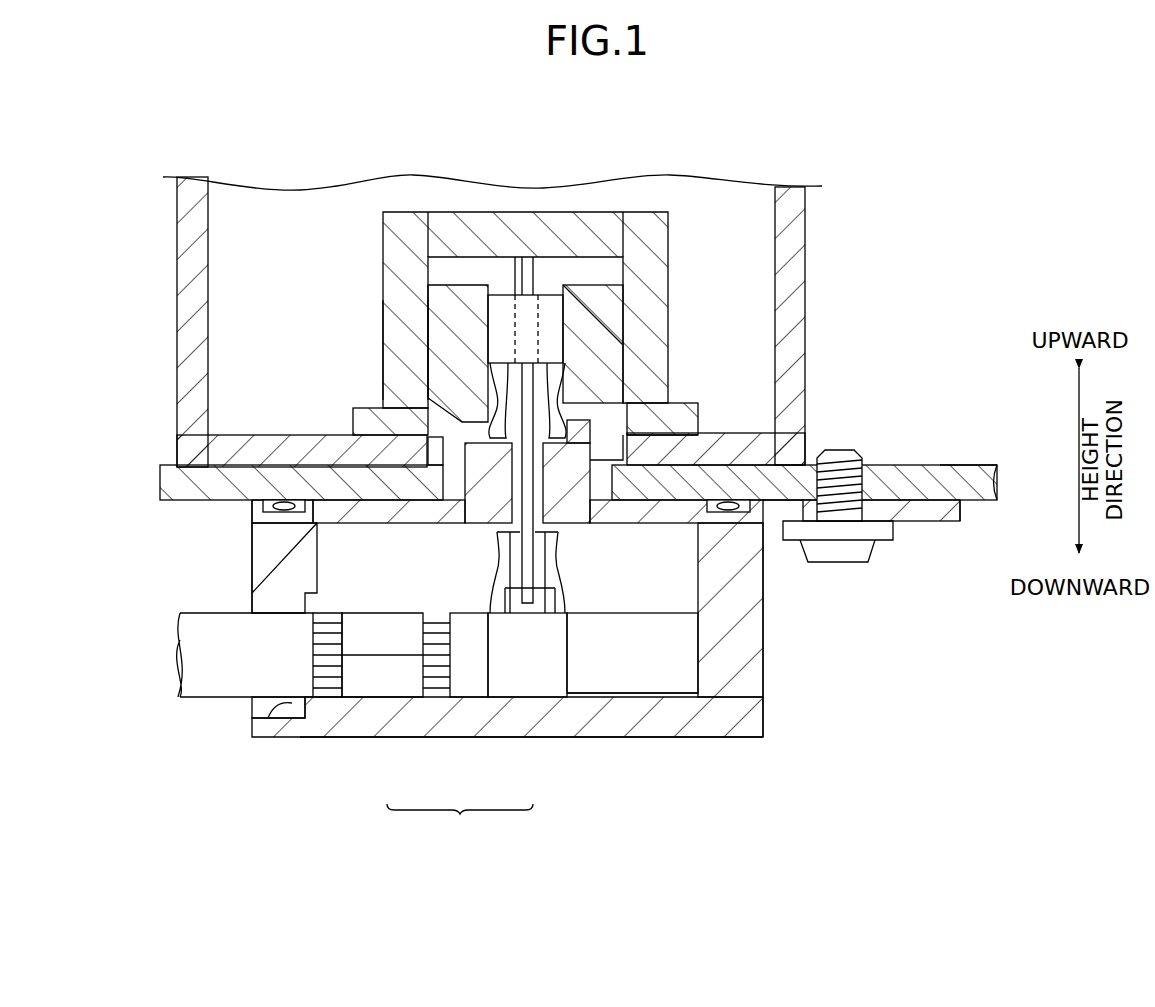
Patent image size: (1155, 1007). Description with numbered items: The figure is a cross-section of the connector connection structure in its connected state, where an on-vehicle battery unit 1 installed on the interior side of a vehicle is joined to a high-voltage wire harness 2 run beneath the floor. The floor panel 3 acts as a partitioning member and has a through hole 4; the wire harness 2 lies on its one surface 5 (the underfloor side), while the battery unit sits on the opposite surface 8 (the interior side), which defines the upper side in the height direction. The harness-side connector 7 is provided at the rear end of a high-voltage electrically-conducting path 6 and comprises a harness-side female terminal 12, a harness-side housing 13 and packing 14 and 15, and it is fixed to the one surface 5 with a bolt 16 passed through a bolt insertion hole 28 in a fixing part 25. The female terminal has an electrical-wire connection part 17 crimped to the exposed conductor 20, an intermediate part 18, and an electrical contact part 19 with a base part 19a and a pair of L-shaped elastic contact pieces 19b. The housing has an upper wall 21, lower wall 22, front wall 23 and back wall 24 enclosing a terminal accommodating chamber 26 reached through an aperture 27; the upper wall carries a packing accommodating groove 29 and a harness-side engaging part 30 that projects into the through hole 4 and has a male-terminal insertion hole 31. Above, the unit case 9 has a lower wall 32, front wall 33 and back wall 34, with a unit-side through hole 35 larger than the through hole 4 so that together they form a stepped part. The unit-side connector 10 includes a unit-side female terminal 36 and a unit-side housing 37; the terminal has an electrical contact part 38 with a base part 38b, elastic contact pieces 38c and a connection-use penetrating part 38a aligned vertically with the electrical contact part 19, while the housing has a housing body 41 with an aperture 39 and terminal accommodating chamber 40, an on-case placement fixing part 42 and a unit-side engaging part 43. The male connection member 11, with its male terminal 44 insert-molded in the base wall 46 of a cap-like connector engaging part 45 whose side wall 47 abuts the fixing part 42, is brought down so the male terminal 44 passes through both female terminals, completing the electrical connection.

The on-vehicle battery unit 1 is at (492, 319).
The wire harness 2 is at (582, 583).
The floor panel 3 is at (1000, 485).
The through hole 4 is at (605, 500).
The one surface 5 is at (962, 508).
The high-voltage electrically-conducting path 6 is at (190, 645).
The harness-side connector 7 is at (768, 660).
The opposite surface 8 is at (955, 465).
The unit case 9 is at (175, 312).
The unit-side connector 10 is at (554, 366).
The male connection member 11 is at (523, 278).
The harness-side female terminal 12 is at (460, 824).
The harness-side housing 13 is at (578, 739).
The packing 14 is at (262, 710).
The packing 15 is at (742, 515).
The bolt 16 is at (860, 556).
The electrical-wire connection part 17 is at (405, 680).
The intermediate part 18 is at (475, 680).
The electrical contact part 19 is at (528, 680).
The base part 19a is at (547, 653).
The elastic contact piece 19b is at (553, 603).
The conductor 20 is at (328, 672).
The upper wall 21 is at (388, 515).
The lower wall 22 is at (652, 737).
The front wall 23 is at (262, 532).
The back wall 24 is at (752, 620).
The fixing part 25 is at (920, 512).
The terminal accommodating chamber 26 is at (670, 678).
The aperture 27 is at (280, 707).
The bolt insertion hole 28 is at (866, 506).
The packing accommodating groove 29 is at (748, 498).
The harness-side engaging part 30 is at (592, 424).
The male-terminal insertion hole 31 is at (542, 525).
The lower wall 32 is at (280, 433).
The front wall 33 is at (194, 396).
The back wall 34 is at (800, 290).
The unit-side through hole 35 is at (410, 437).
The unit-side female terminal 36 is at (600, 335).
The unit-side housing 37 is at (620, 292).
The electrical contact part 38 is at (548, 338).
The connection-use penetrating part 38a is at (540, 290).
The base part 38b is at (515, 257).
The elastic contact piece 38c is at (505, 446).
The aperture 39 is at (500, 322).
The terminal accommodating chamber 40 is at (412, 335).
The housing body 41 is at (445, 312).
The on-case placement fixing part 42 is at (680, 420).
The unit-side engaging part 43 is at (700, 430).
The male terminal 44 is at (497, 585).
The connector engaging part 45 is at (645, 212).
The base wall 46 is at (426, 212).
The side wall 47 is at (405, 352).